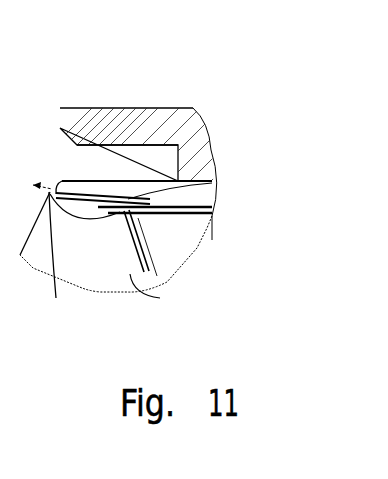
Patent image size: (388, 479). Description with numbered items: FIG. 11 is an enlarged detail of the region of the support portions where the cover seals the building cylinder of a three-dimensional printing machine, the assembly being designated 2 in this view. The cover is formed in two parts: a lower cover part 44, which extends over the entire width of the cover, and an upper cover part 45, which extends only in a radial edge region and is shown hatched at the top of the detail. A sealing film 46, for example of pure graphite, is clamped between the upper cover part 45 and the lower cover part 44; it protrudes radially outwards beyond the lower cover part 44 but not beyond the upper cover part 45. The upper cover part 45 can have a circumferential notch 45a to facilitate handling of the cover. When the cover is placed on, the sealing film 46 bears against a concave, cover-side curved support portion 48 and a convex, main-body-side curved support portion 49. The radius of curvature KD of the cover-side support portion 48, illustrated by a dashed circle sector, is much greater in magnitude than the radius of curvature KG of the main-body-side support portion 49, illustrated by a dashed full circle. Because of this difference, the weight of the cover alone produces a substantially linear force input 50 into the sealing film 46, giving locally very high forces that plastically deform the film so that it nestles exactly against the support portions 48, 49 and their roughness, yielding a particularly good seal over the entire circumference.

The vehicle window arrangement 2 is at (160, 298).
The lower cover part 44 is at (181, 230).
The upper cover part 45 is at (131, 116).
The circumferential notch 45a is at (108, 158).
The sealing film 46 is at (214, 215).
The cover-side support portion 48 is at (212, 181).
The main-body-side support portion 49 is at (115, 206).
The force input 50 is at (117, 196).
The radius of curvature of the main-body-side support portion KG is at (55, 183).
The radius of curvature of the cover-side support portion KD is at (40, 248).